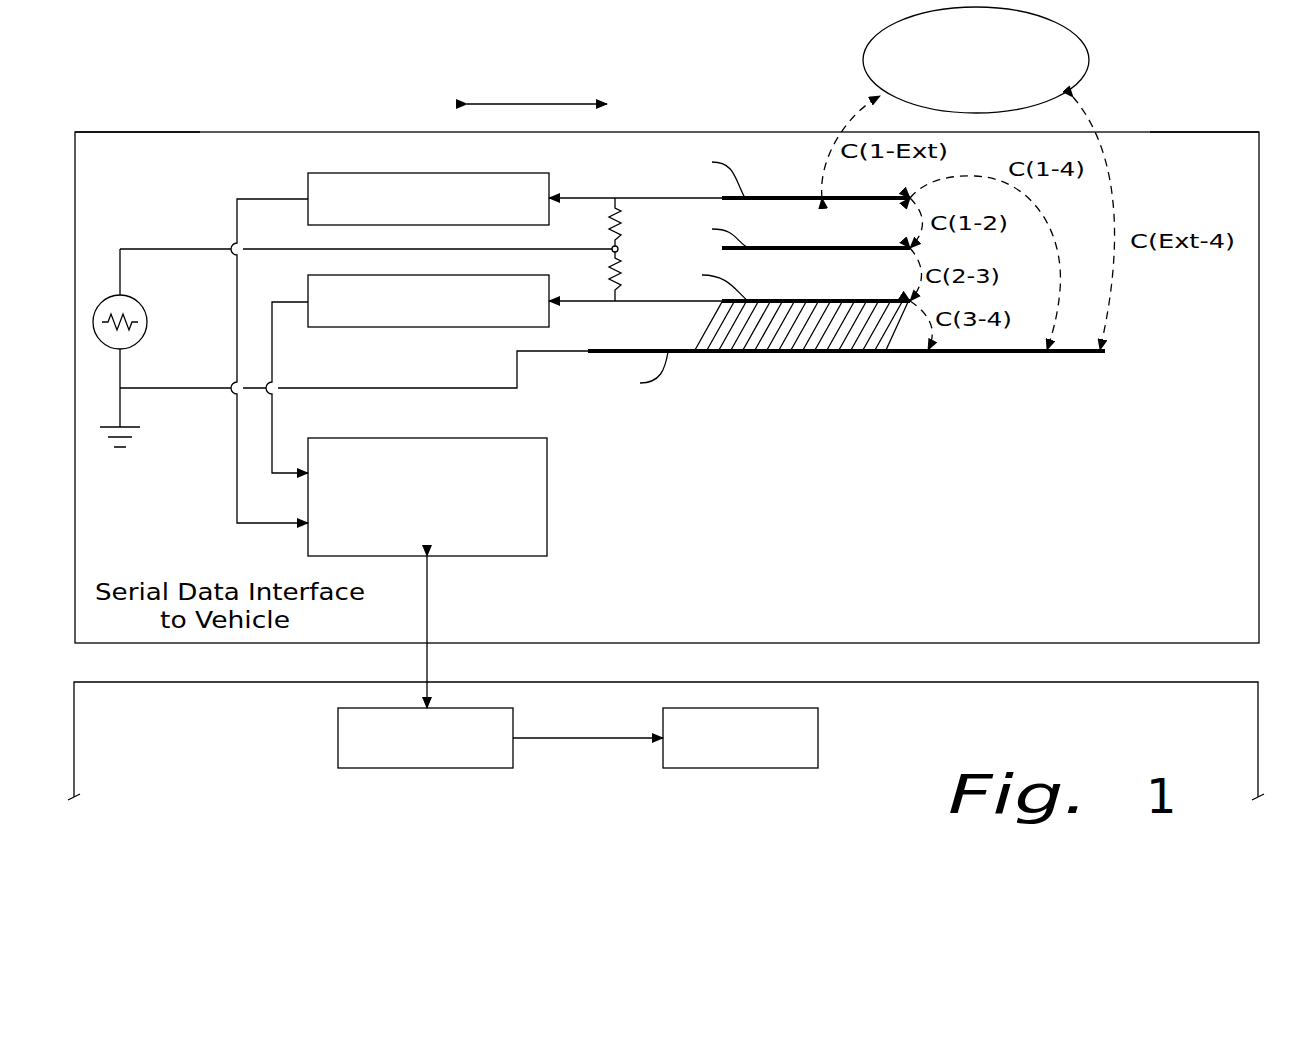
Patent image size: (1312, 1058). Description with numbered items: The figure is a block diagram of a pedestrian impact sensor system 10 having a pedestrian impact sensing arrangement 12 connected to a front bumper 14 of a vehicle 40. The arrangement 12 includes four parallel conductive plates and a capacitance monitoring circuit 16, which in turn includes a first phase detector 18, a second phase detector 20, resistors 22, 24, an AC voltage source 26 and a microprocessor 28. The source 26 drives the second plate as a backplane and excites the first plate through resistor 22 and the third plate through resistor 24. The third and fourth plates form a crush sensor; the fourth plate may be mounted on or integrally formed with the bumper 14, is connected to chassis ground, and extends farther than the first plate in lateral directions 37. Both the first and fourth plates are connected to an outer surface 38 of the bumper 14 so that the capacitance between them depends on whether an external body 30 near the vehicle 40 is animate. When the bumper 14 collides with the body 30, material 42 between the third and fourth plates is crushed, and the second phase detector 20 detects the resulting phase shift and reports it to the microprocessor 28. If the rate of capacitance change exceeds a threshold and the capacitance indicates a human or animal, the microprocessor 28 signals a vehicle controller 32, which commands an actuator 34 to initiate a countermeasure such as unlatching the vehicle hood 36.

The sensor system 10 is at (195, 100).
The pedestrian impact sensing arrangement 12 is at (895, 415).
The front bumper 14 is at (362, 132).
The capacitance monitoring circuit 16 is at (628, 452).
The first phase detector 18 is at (308, 178).
The second phase detector 20 is at (403, 328).
The resistor 22 is at (608, 220).
The resistor 24 is at (608, 270).
The AC voltage source 26 is at (140, 312).
The microprocessor 28 is at (547, 507).
The external body 30 is at (992, 71).
The vehicle controller 32 is at (338, 738).
The actuator 34 is at (818, 738).
The vehicle hood 36 is at (1258, 718).
The lateral directions 37 is at (545, 104).
The outer surface 38 is at (990, 352).
The vehicle 40 is at (1210, 125).
The material 42 is at (787, 330).